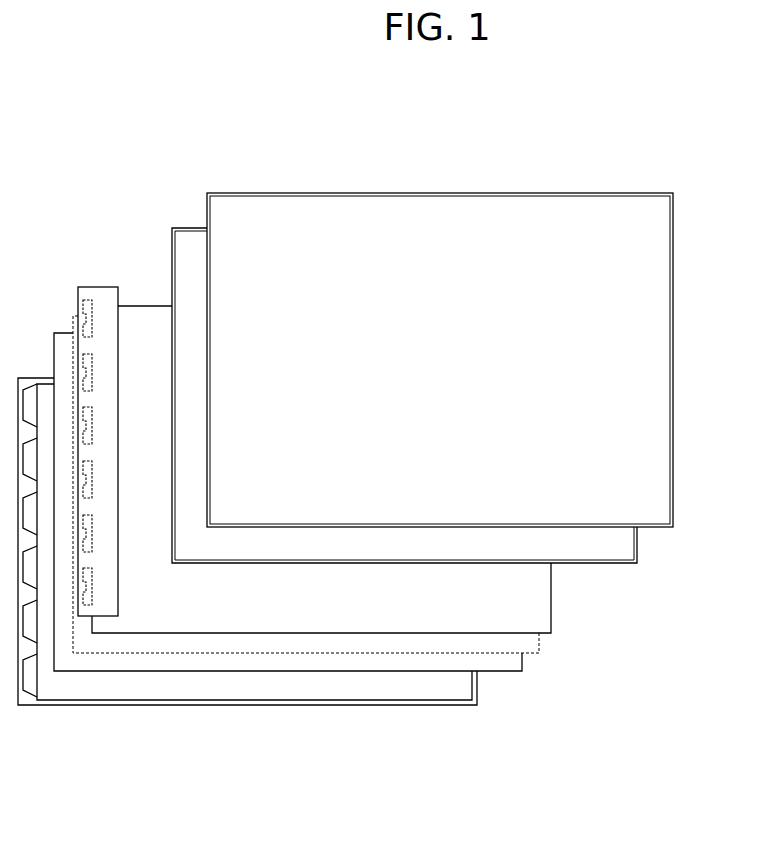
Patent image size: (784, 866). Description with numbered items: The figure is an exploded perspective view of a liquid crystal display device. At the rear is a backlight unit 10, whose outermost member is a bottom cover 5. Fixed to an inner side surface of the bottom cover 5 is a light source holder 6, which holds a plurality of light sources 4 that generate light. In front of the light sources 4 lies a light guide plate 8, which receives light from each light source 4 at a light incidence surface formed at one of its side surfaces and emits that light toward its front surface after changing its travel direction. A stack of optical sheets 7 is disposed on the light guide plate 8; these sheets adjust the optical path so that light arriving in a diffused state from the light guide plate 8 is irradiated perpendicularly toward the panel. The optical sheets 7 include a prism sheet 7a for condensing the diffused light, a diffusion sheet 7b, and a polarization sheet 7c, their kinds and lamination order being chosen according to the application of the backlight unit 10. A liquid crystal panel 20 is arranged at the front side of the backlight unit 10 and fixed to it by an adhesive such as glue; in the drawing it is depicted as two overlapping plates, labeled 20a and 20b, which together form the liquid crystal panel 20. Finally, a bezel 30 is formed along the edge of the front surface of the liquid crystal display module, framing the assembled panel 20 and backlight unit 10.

The light source 4 is at (88, 602).
The bottom cover 5 is at (372, 706).
The light source holder 6 is at (106, 605).
The optical sheets 7 is at (302, 559).
The prism sheet 7a is at (248, 662).
The diffusion sheet 7b is at (286, 643).
The polarization sheet 7c is at (321, 621).
The light guide plate 8 is at (207, 688).
The backlight unit 10 is at (85, 810).
The liquid crystal panel 20 is at (463, 413).
The first substrate 20a is at (638, 563).
The second substrate 20b is at (628, 546).
The bezel 30 is at (673, 357).